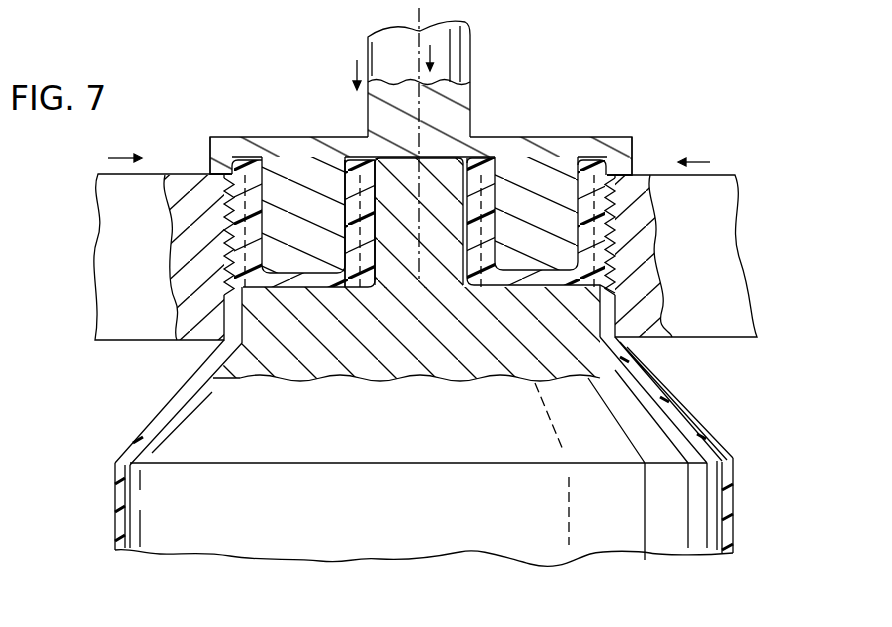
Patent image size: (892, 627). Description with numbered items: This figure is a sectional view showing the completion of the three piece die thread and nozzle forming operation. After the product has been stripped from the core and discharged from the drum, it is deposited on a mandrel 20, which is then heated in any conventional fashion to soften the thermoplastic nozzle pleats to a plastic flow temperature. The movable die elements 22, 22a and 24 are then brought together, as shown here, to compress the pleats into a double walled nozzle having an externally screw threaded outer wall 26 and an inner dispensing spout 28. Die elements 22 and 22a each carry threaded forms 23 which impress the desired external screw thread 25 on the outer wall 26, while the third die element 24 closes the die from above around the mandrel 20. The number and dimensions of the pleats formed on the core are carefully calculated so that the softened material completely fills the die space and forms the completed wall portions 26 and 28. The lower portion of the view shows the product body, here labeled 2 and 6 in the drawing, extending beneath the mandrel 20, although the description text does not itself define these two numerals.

The tube wall 2 is at (732, 528).
The flared conical end 6 is at (692, 428).
The mandrel 20 is at (612, 545).
The movable die element 22 is at (98, 190).
The movable die element 22a is at (736, 224).
The threaded forms 23 is at (246, 163).
The movable die element 24 is at (537, 145).
The external screw thread 25 is at (234, 208).
The outer wall 26 is at (262, 200).
The inner dispensing spout 28 is at (370, 205).